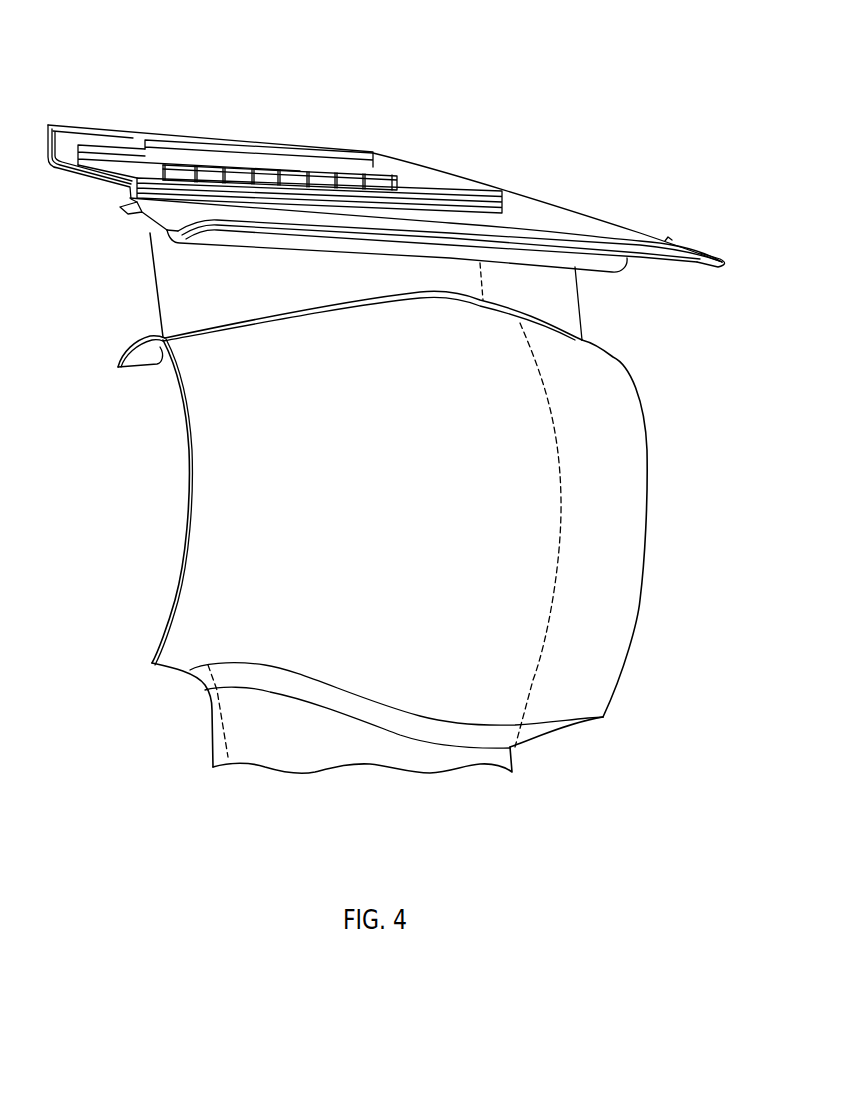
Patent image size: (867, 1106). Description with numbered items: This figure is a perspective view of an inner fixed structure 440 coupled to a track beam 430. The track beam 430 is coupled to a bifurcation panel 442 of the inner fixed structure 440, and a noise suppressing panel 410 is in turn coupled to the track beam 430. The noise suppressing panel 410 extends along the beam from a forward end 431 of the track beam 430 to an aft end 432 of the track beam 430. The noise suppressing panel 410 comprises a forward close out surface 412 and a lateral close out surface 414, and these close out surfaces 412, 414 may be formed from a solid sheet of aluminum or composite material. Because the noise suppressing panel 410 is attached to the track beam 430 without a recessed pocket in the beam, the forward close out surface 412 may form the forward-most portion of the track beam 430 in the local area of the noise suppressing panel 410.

The forward end 431 is at (98, 107).
The track beam 430 is at (300, 144).
The aft end 432 is at (684, 214).
The lateral close out surface 414 is at (527, 232).
The forward close out surface 412 is at (120, 209).
The noise suppressing panel 410 is at (140, 222).
The bifurcation panel 442 is at (159, 292).
The inner fixed structure 440 is at (647, 533).